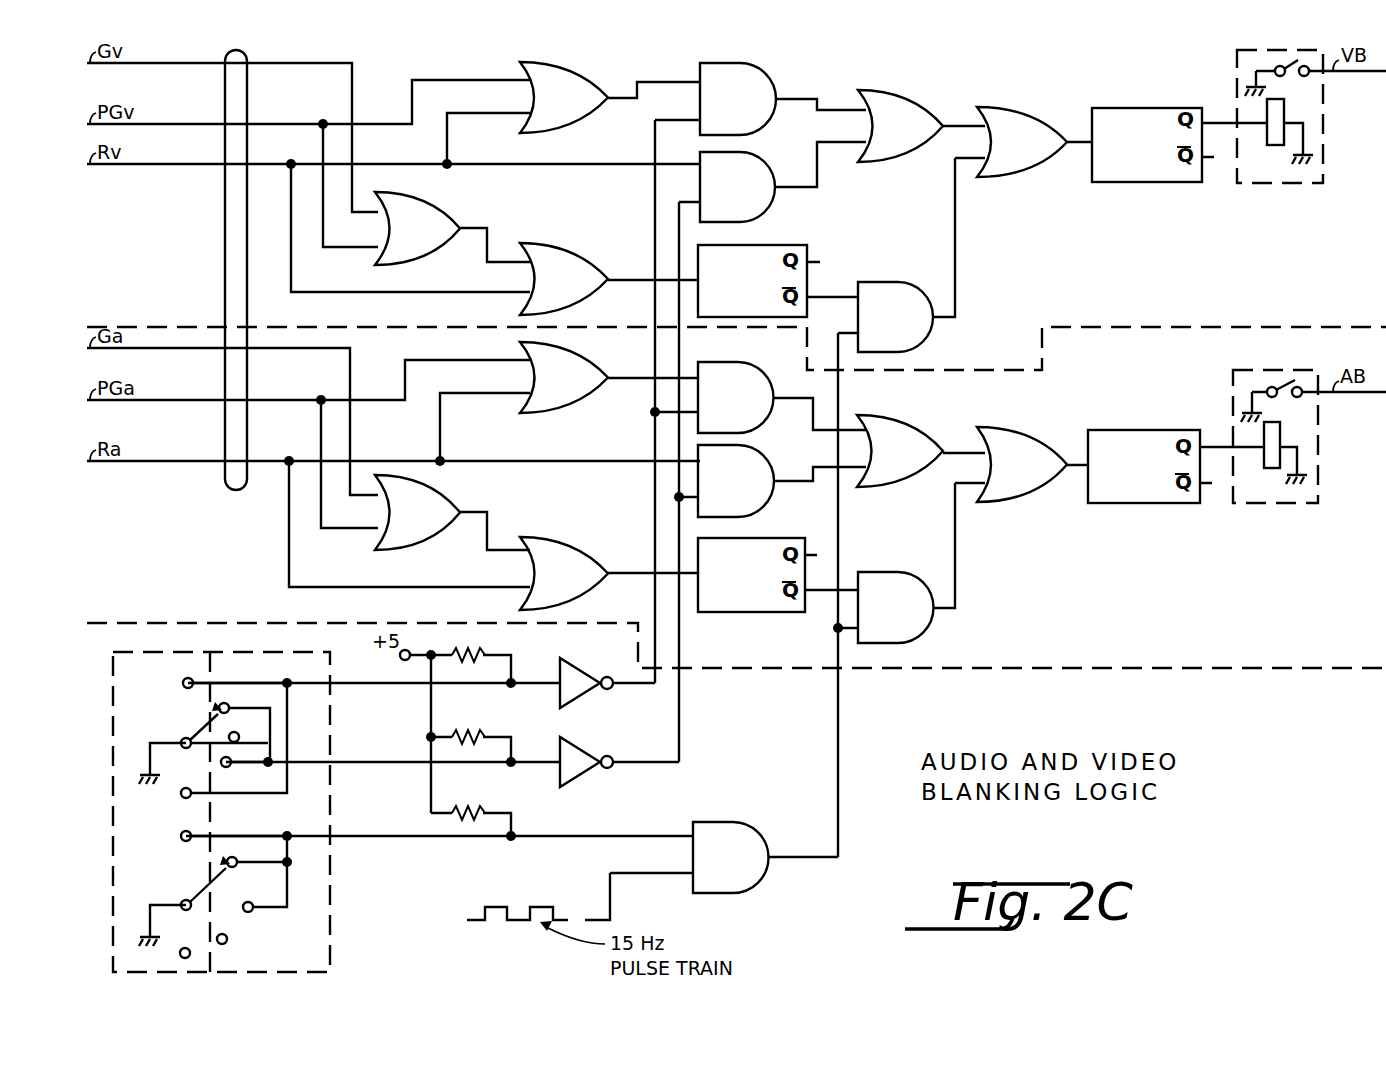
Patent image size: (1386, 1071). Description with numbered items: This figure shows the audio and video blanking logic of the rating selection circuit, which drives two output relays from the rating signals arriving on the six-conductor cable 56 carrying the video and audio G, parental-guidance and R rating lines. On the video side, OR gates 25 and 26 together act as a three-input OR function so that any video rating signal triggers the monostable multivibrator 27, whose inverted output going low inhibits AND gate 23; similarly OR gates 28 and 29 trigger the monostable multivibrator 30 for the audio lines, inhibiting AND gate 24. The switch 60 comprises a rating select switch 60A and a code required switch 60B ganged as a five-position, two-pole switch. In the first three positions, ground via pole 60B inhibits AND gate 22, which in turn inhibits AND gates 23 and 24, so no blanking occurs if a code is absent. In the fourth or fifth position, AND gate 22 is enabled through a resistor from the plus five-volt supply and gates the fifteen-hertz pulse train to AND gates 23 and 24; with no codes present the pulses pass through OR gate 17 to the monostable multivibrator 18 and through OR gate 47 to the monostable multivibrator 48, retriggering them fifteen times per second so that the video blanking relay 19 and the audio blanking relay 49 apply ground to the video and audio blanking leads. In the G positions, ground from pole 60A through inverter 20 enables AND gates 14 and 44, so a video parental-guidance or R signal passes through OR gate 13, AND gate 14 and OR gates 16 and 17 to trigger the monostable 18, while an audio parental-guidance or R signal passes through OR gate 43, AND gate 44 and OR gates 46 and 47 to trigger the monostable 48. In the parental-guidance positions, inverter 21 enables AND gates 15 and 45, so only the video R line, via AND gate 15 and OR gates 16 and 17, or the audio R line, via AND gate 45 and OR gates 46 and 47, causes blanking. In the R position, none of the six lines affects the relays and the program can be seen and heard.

The OR gate 13 is at (584, 80).
The AND gate 14 is at (765, 80).
The AND gate 15 is at (761, 166).
The OR gate 16 is at (910, 101).
The OR gate 17 is at (1018, 103).
The monostable multivibrator 18 is at (1122, 108).
The video blanking relay 19 is at (1233, 68).
The inverter 20 is at (580, 670).
The inverter 21 is at (583, 749).
The AND gate 22 is at (750, 830).
The AND gate 23 is at (897, 282).
The AND gate 24 is at (895, 572).
The OR gate 25 is at (445, 210).
The OR gate 26 is at (579, 250).
The monostable multivibrator 27 is at (790, 245).
The OR gate 28 is at (445, 496).
The OR gate 29 is at (580, 542).
The monostable multivibrator 30 is at (764, 612).
The OR gate 43 is at (570, 411).
The AND gate 44 is at (744, 364).
The AND gate 45 is at (754, 452).
The OR gate 46 is at (910, 422).
The OR gate 47 is at (1019, 427).
The monostable multivibrator 48 is at (1130, 430).
The audio blanking relay 49 is at (1240, 370).
The output line 56 is at (225, 249).
The switch 60 is at (188, 652).
The rating select switch 60A is at (203, 715).
The code required switch 60B is at (208, 880).